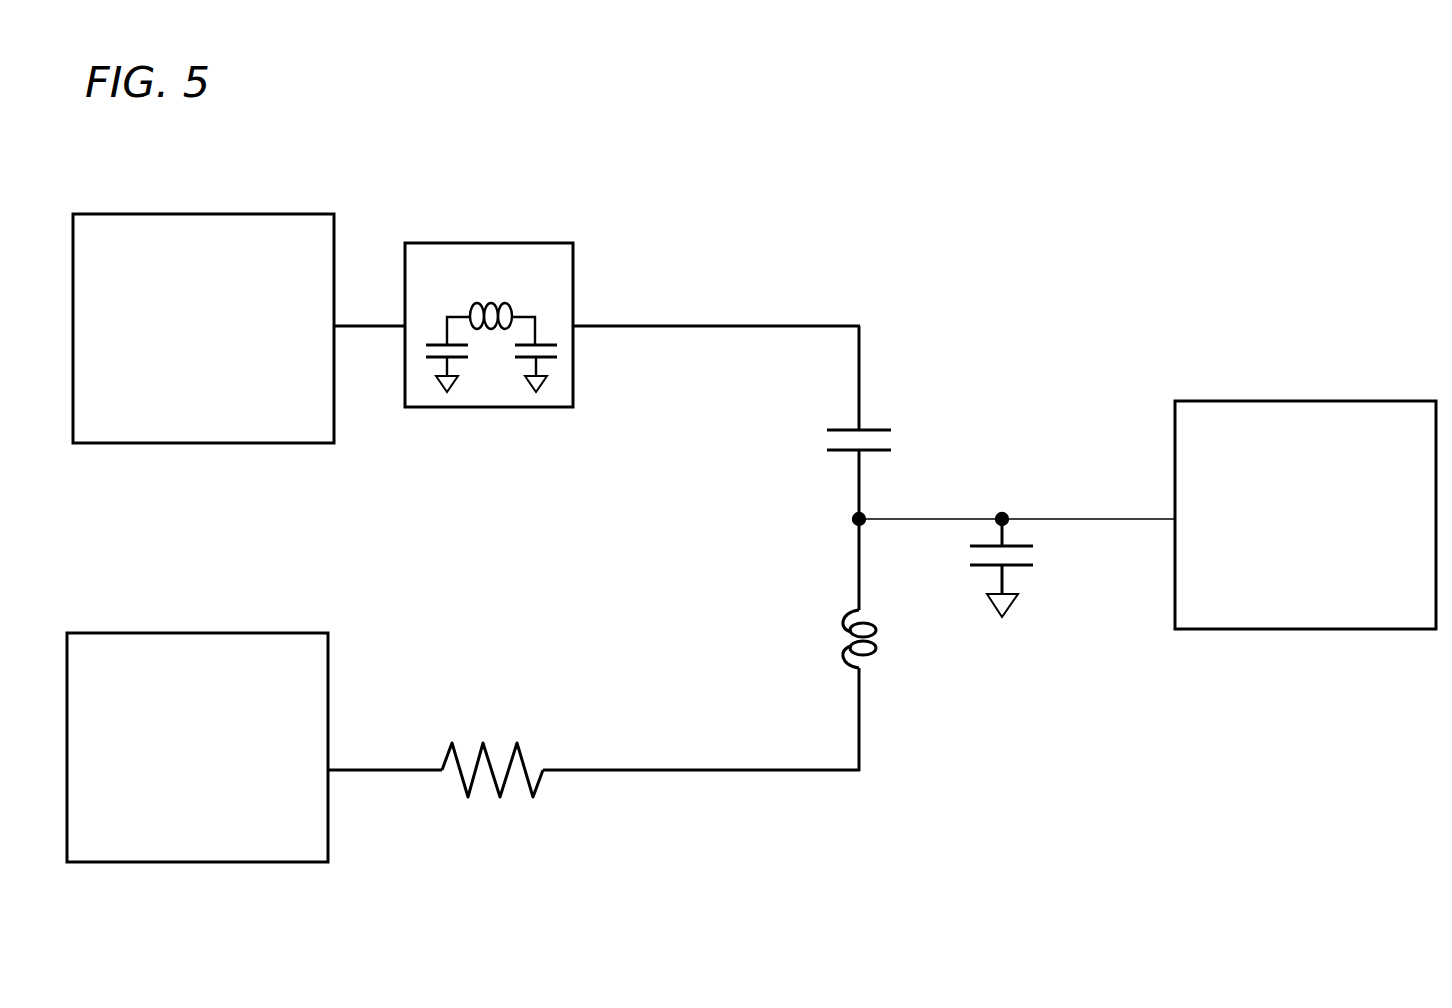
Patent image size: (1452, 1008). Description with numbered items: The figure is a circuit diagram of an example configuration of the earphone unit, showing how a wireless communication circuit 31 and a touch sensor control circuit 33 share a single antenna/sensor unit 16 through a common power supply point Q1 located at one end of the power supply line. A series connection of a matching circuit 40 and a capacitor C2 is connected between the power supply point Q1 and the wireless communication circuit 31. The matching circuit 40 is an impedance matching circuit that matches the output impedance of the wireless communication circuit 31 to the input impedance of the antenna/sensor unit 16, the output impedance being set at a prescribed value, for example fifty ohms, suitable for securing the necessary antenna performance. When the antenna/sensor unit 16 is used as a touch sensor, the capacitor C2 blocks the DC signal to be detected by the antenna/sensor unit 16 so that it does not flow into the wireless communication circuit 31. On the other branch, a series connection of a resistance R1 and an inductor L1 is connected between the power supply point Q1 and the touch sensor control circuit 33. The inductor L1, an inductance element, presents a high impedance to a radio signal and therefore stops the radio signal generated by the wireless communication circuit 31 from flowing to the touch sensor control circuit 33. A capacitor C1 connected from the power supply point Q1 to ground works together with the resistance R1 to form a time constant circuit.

The wireless communication circuit 31 is at (148, 213).
The matching circuit 40 is at (574, 267).
The antenna/sensor unit 16 is at (1340, 400).
The touch sensor control circuit 33 is at (150, 632).
The capacitor C2 is at (832, 430).
The capacitor C1 is at (1025, 572).
The power supply point Q1 is at (855, 522).
The inductor L1 is at (843, 637).
The resistance R1 is at (468, 800).